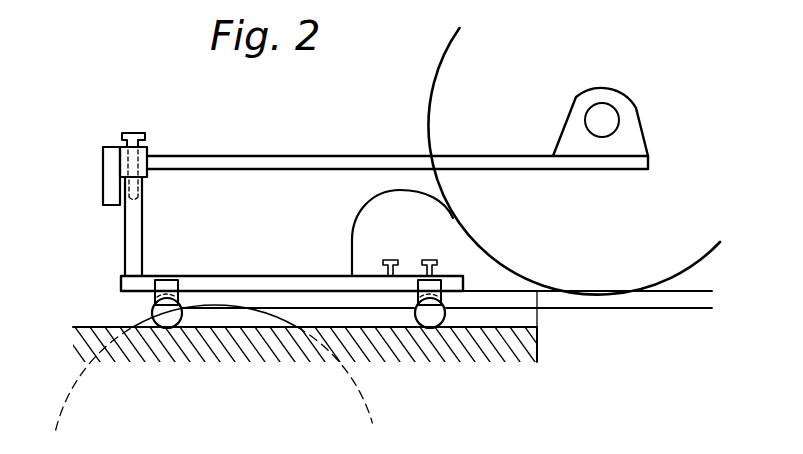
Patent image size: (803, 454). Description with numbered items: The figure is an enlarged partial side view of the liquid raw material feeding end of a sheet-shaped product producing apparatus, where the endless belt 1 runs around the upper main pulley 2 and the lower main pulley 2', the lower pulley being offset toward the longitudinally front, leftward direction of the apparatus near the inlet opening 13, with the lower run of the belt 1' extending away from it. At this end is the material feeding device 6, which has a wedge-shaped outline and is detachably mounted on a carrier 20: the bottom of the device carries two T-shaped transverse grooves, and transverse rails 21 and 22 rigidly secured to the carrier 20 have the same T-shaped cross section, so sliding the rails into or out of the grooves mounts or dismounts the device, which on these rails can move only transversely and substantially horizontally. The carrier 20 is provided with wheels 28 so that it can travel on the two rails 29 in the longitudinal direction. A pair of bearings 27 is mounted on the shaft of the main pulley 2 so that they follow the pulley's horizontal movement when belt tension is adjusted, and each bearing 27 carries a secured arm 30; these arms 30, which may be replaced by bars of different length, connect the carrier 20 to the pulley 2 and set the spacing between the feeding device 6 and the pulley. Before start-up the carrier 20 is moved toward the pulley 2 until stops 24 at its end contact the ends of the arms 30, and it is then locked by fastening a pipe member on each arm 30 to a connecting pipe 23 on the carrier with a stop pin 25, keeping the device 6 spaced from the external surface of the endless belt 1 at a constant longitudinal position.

The endless belt 1 is at (590, 276).
The support surface 1' is at (447, 331).
The upper main pulley 2 is at (560, 161).
The lower main pulley 2' is at (231, 370).
The material feeding device 6 is at (500, 285).
The inlet opening 13 is at (560, 302).
The carrier 20 is at (256, 276).
The transverse rail 21 is at (385, 260).
The transverse rail 22 is at (432, 265).
The connecting pipe 23 is at (147, 232).
The stop 24 is at (103, 162).
The stop pin 25 is at (133, 133).
The bearing 27 is at (633, 133).
The wheels 28 is at (170, 328).
The rails 29 is at (247, 330).
The arm 30 is at (283, 156).